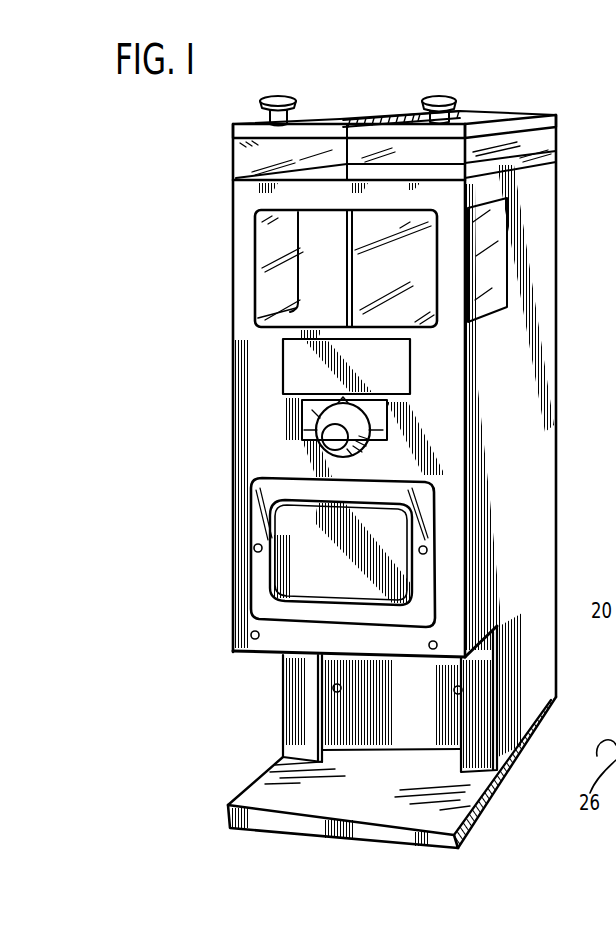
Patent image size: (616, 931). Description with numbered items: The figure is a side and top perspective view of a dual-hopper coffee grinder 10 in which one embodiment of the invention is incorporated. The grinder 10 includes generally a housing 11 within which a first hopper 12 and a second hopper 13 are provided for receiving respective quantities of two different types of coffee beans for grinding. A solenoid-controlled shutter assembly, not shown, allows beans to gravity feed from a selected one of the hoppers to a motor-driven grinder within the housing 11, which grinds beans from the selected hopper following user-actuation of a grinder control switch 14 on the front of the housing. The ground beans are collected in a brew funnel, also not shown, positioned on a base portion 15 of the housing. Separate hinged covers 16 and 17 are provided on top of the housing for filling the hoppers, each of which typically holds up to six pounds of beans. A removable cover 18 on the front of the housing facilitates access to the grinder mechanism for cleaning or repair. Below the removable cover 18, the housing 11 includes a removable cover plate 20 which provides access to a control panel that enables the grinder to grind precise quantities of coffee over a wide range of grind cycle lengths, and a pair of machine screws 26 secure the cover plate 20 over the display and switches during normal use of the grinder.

The dual-hopper grinder 10 is at (216, 234).
The housing 11 is at (243, 453).
The first hopper 12 is at (313, 273).
The second hopper 13 is at (428, 288).
The grinder control switch 14 is at (323, 419).
The base portion 15 is at (258, 786).
The hinged cover 16 is at (322, 118).
The hinged cover 17 is at (497, 118).
The removable cover 18 is at (258, 608).
The removable cover plate 20 is at (337, 712).
The machine screws 26 is at (456, 694).